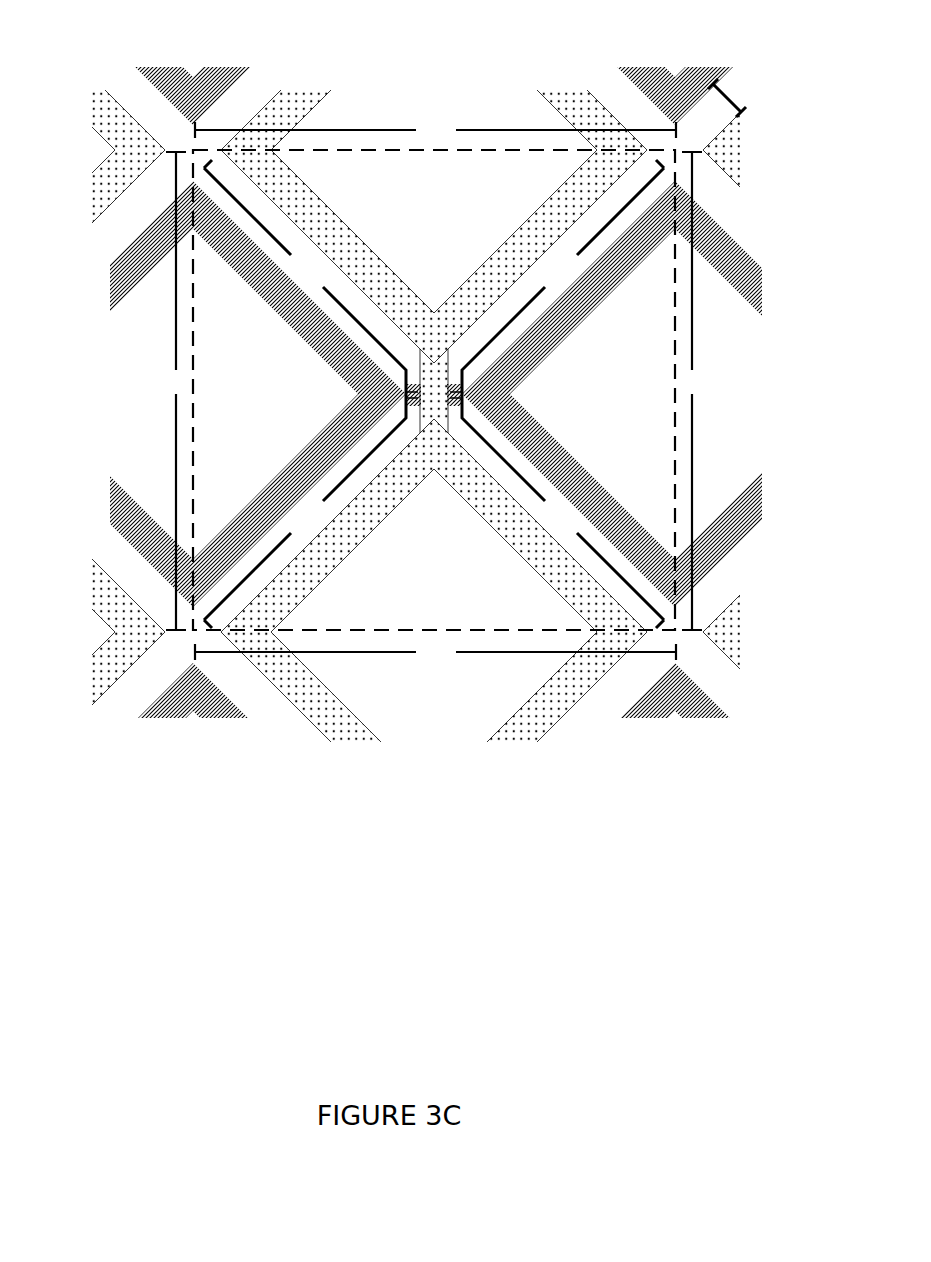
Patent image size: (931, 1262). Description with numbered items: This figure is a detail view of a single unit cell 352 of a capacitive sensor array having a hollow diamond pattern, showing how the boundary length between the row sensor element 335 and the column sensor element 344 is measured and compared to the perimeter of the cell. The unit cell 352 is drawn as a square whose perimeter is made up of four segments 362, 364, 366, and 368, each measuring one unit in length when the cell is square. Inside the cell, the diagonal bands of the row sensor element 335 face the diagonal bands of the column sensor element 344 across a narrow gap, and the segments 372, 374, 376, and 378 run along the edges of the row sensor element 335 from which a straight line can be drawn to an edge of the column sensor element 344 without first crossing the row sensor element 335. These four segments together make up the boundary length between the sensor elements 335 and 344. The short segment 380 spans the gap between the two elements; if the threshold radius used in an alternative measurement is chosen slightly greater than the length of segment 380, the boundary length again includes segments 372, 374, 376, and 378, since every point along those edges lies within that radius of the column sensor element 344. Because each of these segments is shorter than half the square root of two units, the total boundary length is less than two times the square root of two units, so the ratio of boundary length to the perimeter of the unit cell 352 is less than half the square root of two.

The row sensor element 335 is at (776, 291).
The column sensor element 344 is at (364, 756).
The unit cell 352 is at (178, 428).
The unit cell perimeter segment 362 is at (435, 130).
The unit cell perimeter segment 364 is at (697, 391).
The unit cell perimeter segment 366 is at (435, 652).
The unit cell perimeter segment 368 is at (170, 391).
The boundary length segment 372 is at (305, 277).
The boundary length segment 374 is at (563, 277).
The boundary length segment 376 is at (563, 511).
The boundary length segment 378 is at (305, 511).
The gap segment 380 is at (744, 82).